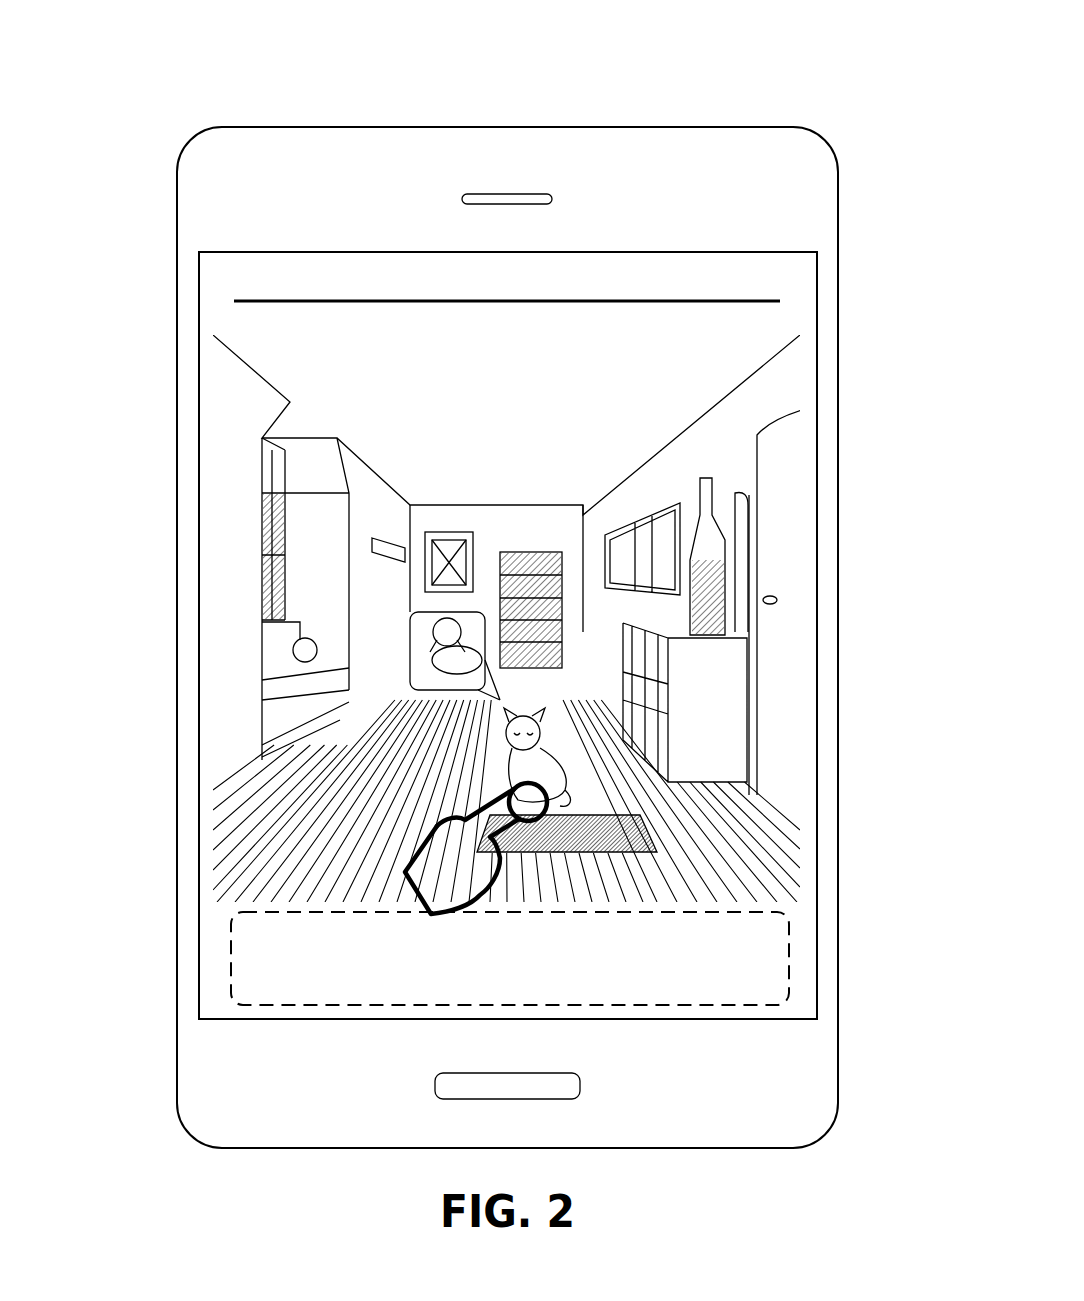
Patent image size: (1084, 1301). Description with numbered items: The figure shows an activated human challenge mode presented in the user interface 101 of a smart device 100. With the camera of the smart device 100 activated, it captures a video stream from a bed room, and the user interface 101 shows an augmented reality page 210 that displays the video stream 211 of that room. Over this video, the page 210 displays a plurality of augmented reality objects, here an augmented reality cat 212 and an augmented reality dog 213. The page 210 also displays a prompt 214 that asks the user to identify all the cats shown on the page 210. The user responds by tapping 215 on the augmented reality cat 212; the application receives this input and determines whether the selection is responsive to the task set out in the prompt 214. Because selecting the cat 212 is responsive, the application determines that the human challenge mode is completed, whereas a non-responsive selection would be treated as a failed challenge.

The smart device 100 is at (772, 167).
The user interface 101 is at (283, 239).
The augmented reality page 210 is at (507, 281).
The video stream 211 is at (226, 511).
The augmented reality cat 212 is at (600, 764).
The augmented reality dog 213 is at (405, 646).
The prompt 214 is at (243, 989).
The tapping 215 is at (383, 880).